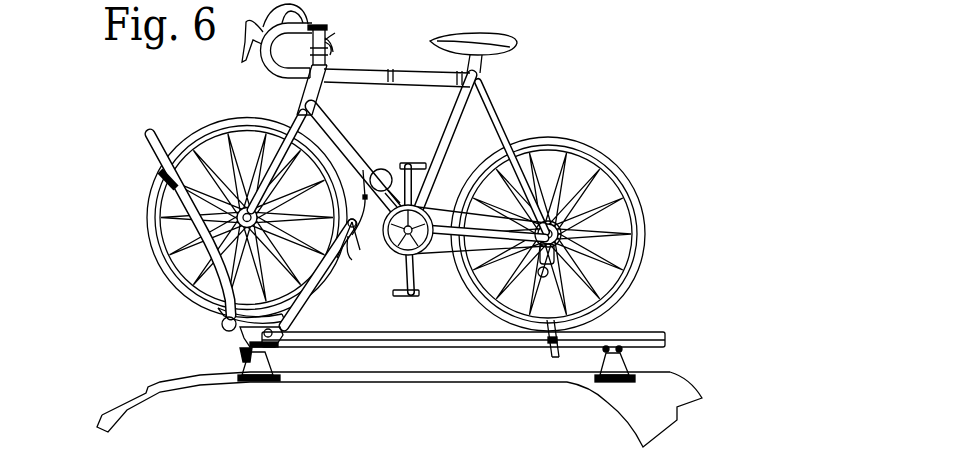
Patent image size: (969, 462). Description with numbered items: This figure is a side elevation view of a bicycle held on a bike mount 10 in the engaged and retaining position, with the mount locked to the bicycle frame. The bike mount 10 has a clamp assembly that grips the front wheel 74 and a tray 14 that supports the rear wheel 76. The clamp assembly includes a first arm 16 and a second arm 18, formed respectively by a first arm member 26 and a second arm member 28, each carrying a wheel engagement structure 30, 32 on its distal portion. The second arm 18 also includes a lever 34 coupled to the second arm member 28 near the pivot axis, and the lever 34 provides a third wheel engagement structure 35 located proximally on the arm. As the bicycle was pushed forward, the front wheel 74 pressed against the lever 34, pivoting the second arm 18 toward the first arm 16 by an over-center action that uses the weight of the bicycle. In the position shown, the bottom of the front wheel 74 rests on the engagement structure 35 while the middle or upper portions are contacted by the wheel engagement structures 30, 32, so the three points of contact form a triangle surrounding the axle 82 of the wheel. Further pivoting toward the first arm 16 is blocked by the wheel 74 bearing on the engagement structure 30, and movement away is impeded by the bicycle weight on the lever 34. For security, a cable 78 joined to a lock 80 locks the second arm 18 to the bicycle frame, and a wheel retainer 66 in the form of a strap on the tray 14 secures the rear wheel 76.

The bike mount 10 is at (77, 216).
The tray 14 is at (487, 346).
The first arm 16 is at (193, 246).
The second arm 18 is at (319, 307).
The first arm member 26 is at (173, 210).
The second arm member 28 is at (325, 281).
The wheel engagement structure 30 is at (157, 165).
The wheel engagement structure 32 is at (340, 254).
The lever 34 is at (237, 338).
The third wheel engagement structure 35 is at (223, 325).
The wheel retainer 66 is at (557, 360).
The front wheel 74 is at (217, 123).
The rear wheel 76 is at (645, 245).
The cable 78 is at (400, 163).
The lock 80 is at (364, 165).
The axle 82 is at (180, 190).